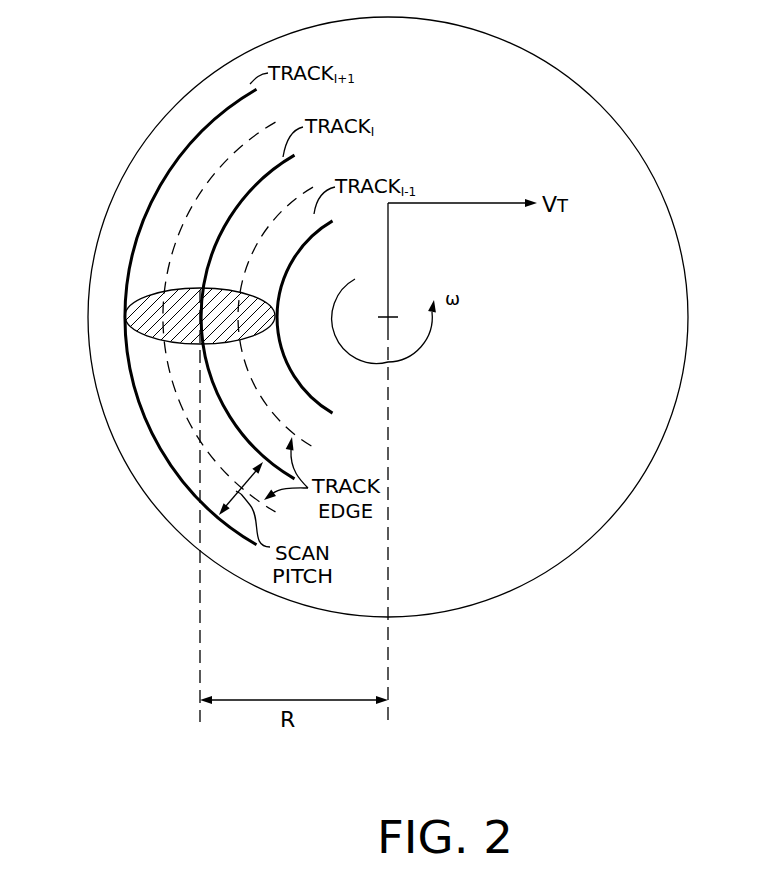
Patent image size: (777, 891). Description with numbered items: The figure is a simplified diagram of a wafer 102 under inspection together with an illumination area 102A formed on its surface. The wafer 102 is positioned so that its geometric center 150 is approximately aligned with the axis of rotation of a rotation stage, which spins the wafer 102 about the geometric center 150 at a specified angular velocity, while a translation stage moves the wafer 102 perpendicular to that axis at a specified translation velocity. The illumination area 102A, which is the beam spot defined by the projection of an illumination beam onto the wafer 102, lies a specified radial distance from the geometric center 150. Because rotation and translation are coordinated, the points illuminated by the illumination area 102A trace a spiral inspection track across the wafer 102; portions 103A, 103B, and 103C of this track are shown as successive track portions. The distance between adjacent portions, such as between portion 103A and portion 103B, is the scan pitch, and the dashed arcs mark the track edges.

The wafer 102 is at (622, 127).
The illumination area 102A is at (165, 341).
The portion of inspection track (TRACK i+1) 103A is at (203, 128).
The portion of inspection track (TRACK i) 103B is at (232, 212).
The portion of inspection track (TRACK i-1) 103C is at (279, 293).
The geometric center 150 is at (392, 316).